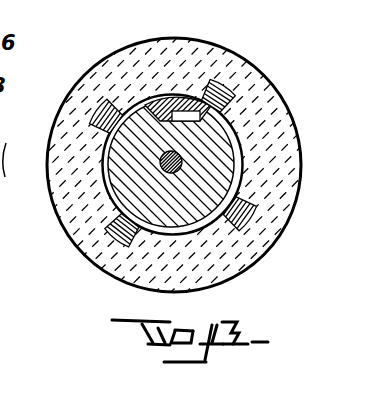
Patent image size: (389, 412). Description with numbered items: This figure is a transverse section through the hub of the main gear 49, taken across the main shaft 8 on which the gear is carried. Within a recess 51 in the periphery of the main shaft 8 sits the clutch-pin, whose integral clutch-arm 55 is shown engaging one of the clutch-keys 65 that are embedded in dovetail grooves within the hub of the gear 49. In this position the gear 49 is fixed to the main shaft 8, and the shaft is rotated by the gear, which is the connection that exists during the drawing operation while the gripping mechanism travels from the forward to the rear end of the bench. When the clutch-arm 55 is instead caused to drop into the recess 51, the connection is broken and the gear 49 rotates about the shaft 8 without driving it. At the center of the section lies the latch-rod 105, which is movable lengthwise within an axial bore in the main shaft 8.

The main gear 49 is at (250, 264).
The main shaft 8 is at (227, 164).
The clutch-arm 55 is at (188, 97).
The recess 51 is at (170, 121).
The latch-rod 105 is at (178, 171).
The clutch-keys 65 is at (100, 108).